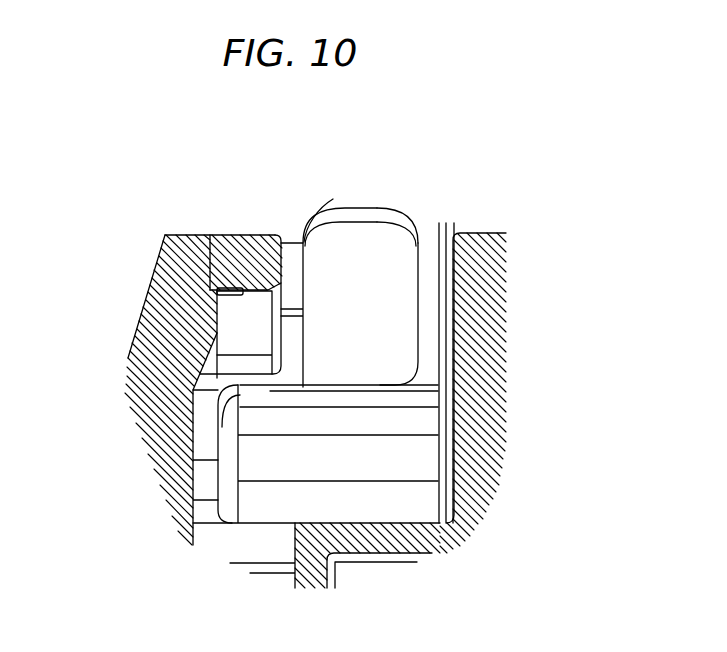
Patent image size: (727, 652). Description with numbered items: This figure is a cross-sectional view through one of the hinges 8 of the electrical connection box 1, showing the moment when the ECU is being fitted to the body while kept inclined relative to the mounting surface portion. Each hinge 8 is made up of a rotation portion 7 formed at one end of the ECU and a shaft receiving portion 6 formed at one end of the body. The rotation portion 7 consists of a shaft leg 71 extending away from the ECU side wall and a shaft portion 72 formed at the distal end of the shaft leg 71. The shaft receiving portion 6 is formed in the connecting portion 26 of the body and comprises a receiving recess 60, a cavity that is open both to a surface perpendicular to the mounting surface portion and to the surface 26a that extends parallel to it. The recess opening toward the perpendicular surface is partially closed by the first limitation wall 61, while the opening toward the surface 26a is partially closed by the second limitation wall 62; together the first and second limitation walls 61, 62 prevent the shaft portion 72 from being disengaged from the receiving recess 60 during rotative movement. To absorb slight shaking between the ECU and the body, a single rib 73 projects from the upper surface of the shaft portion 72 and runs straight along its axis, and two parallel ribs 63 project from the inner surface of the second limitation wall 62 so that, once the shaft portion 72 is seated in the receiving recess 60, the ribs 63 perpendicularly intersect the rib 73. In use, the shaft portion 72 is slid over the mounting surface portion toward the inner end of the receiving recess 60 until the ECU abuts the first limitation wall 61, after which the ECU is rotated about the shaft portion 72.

The electrical connection box 1 is at (526, 144).
The shaft receiving portion 6 is at (130, 226).
The rotation portion 7 is at (281, 540).
The hinge 8 is at (440, 177).
The connecting portion 26 is at (162, 354).
The surface 26a is at (178, 234).
The receiving recess 60 is at (205, 390).
The first limitation wall 61 is at (262, 333).
The second limitation wall 62 is at (252, 246).
The rib 63 is at (224, 291).
The shaft leg 71 is at (386, 299).
The shaft portion 72 is at (275, 380).
The rib 73 is at (303, 390).